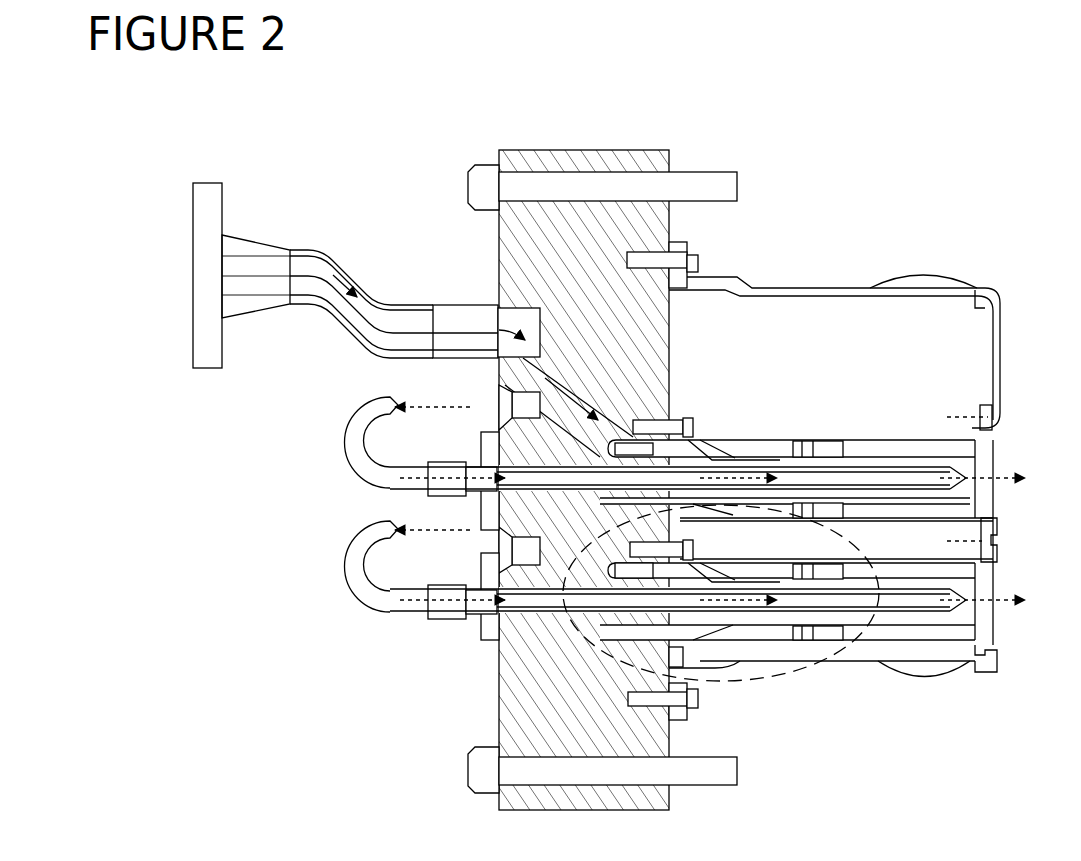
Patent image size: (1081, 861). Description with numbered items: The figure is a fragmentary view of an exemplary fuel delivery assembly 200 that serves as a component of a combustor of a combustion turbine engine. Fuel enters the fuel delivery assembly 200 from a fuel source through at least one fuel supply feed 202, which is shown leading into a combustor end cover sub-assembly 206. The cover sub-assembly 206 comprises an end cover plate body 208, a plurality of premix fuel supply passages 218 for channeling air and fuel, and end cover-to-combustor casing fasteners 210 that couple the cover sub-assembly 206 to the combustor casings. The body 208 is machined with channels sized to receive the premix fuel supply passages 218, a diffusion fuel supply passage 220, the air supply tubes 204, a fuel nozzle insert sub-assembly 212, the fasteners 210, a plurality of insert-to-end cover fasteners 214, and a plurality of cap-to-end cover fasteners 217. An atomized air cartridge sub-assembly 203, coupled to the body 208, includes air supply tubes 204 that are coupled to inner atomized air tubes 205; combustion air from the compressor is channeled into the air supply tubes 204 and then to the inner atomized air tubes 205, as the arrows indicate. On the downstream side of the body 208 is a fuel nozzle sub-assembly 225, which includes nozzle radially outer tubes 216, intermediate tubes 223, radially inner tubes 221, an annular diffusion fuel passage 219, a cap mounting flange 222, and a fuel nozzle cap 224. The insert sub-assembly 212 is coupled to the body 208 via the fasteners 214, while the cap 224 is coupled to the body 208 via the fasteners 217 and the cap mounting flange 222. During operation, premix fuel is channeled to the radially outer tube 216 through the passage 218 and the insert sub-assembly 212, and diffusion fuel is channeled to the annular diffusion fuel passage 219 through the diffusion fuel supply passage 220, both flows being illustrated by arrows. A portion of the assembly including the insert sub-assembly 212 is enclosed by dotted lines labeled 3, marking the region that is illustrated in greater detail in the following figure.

The fuel delivery assembly 200 is at (205, 150).
The fuel supply feed 202 is at (340, 256).
The atomized air cartridge sub-assembly 203 is at (340, 410).
The air supply tube 204 is at (345, 445).
The inner atomized air tube 205 is at (930, 490).
The combustor end cover sub-assembly 206 is at (552, 150).
The end cover plate body 208 is at (606, 257).
The end cover-to-combustor casing fastener 210 is at (700, 172).
The fuel nozzle insert sub-assembly 212 is at (712, 445).
The insert-to-end cover fastener 214 is at (700, 425).
The nozzle radially outer tube 216 is at (858, 440).
The cap-to-end cover fastener 217 is at (690, 700).
The premix fuel supply passage 218 is at (600, 415).
The annular diffusion fuel passage 219 is at (975, 466).
The diffusion fuel supply passage 220 is at (510, 398).
The radially inner tube 221 is at (800, 441).
The cap mounting flange 222 is at (745, 280).
The intermediate tube 223 is at (915, 440).
The fuel nozzle cap 224 is at (855, 290).
The fuel nozzle sub-assembly 225 is at (892, 218).
The FIG. 3 detail region 3 is at (850, 685).